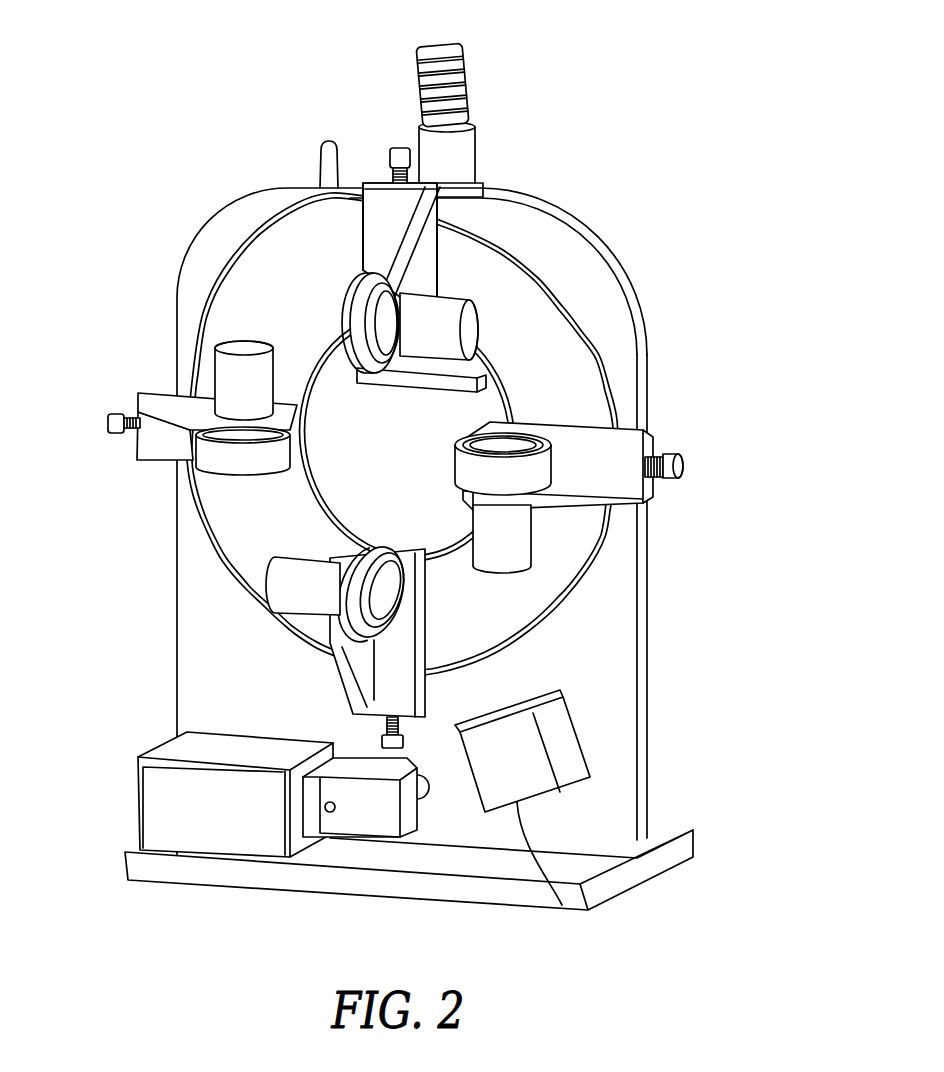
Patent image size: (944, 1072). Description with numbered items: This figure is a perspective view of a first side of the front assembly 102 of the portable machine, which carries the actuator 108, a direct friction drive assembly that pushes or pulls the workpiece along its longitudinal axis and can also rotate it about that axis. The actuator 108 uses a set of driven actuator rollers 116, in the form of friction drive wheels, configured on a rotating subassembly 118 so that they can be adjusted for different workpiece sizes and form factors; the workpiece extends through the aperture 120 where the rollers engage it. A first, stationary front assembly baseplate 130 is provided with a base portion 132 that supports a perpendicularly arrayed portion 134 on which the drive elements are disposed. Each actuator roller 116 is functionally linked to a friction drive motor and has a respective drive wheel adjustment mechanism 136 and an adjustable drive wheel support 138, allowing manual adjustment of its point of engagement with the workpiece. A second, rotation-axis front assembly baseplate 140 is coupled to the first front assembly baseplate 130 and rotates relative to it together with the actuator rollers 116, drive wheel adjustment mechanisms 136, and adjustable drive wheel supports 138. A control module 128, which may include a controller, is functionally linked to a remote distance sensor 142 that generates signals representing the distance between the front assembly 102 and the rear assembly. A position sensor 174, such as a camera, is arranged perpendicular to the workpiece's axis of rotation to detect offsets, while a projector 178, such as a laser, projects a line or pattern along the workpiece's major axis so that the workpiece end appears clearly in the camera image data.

The front assembly 102 is at (149, 146).
The actuator 108 is at (473, 190).
The actuator rollers 116 is at (368, 310).
The rotating subassembly 118 is at (473, 327).
The aperture 120 is at (356, 479).
The control module 128 is at (160, 748).
The first front assembly baseplate 130 is at (627, 263).
The base portion 132 is at (693, 857).
The perpendicularly arrayed portion 134 is at (647, 795).
The drive wheel adjustment mechanisms 136 is at (402, 148).
The adjustable drive wheel support 138 is at (438, 262).
The second front assembly baseplate 140 is at (287, 242).
The remote distance sensor 142 is at (417, 832).
The position sensor 174 is at (562, 905).
The projector 178 is at (523, 707).